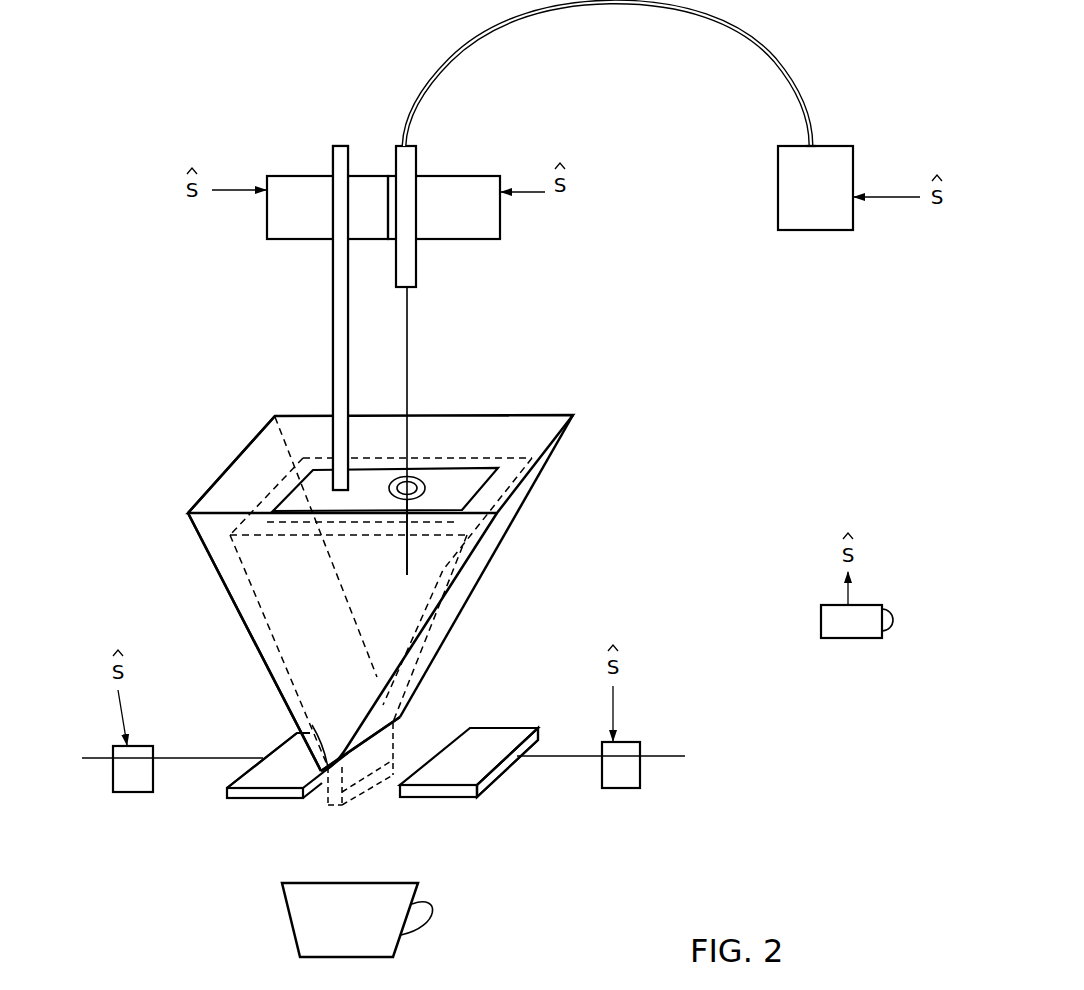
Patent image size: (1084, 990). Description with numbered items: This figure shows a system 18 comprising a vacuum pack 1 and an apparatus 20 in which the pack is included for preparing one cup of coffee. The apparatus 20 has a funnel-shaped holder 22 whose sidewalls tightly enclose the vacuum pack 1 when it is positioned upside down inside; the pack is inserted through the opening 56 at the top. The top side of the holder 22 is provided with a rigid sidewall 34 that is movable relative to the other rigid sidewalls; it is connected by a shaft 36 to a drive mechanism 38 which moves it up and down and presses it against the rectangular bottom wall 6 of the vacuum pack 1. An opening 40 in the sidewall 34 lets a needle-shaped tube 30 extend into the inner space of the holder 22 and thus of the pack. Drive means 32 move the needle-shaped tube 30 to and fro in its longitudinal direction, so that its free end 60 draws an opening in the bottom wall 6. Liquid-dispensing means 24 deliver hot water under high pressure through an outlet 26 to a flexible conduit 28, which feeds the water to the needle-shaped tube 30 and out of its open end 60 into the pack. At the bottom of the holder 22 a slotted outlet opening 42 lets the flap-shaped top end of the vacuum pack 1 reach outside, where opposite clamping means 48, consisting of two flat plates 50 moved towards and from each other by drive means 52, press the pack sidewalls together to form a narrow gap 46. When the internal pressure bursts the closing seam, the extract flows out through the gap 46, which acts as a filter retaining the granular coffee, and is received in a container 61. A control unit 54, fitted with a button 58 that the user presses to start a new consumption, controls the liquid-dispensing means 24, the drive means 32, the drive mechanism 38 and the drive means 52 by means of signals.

The vacuum pack 1 is at (276, 640).
The rectangular bottom wall 6 is at (250, 522).
The system 18 is at (616, 877).
The apparatus 20 is at (565, 584).
The holder 22 is at (530, 497).
The liquid-dispensing means 24 is at (823, 218).
The outlet 26 is at (832, 145).
The conduit 28 is at (580, 8).
The needle-shaped tube 30 is at (410, 355).
The drive means 32 is at (485, 220).
The rigid sidewall 34 is at (458, 482).
The shaft 36 is at (333, 289).
The drive mechanism 38 is at (283, 222).
The opening 40 is at (389, 490).
The slotted outlet opening 42 is at (397, 723).
The gap 46 is at (362, 792).
The clamping means 48 is at (283, 800).
The flat plates 50 is at (237, 800).
The drive means 52 is at (132, 783).
The control unit 54 is at (859, 627).
The opening 56 is at (240, 482).
The button 58 is at (898, 620).
The free end 60 is at (393, 551).
The container 61 is at (300, 920).